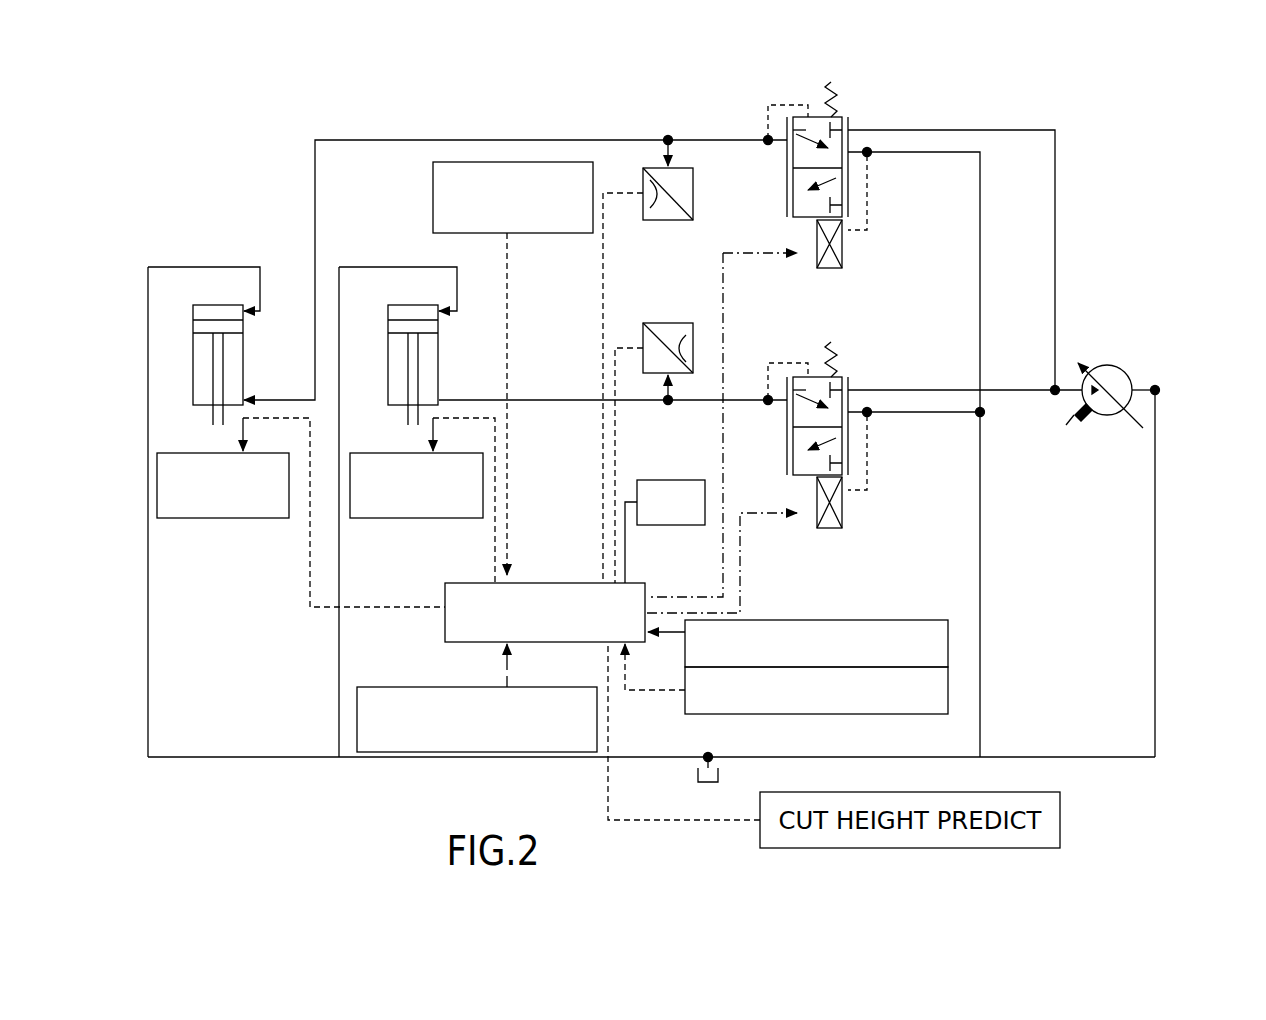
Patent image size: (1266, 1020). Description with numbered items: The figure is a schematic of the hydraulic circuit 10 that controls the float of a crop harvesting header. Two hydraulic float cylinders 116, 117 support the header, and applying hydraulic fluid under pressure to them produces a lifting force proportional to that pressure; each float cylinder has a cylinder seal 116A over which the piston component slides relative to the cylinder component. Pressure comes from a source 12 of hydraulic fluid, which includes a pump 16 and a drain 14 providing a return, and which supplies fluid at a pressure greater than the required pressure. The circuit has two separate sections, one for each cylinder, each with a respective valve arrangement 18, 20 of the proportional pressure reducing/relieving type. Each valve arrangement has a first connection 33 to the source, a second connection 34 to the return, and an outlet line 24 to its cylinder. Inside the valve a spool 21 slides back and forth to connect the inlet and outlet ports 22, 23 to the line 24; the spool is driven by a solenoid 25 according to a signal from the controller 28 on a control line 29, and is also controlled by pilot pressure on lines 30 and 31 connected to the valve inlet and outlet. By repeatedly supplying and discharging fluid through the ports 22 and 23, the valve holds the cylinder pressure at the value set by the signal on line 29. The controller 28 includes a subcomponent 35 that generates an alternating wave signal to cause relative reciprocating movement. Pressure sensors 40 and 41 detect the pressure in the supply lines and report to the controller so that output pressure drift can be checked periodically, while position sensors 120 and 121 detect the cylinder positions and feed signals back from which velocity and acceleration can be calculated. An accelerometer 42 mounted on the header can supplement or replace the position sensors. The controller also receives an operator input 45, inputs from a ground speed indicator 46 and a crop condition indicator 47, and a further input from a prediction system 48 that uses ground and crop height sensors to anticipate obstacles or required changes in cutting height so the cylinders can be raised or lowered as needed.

The circuit 10 is at (1125, 221).
The source 12 is at (1053, 400).
The drain 14 is at (1157, 392).
The pump 16 is at (1103, 415).
The valve arrangement 18 is at (822, 323).
The valve arrangement 20 is at (882, 462).
The spool 21 is at (790, 133).
The inlet port 22 is at (800, 196).
The outlet port 23 is at (793, 155).
The line 24 is at (355, 138).
The solenoid 25 is at (833, 260).
The controller 28 is at (575, 583).
The control line 29 is at (720, 418).
The pilot pressure line 30 is at (780, 105).
The pilot pressure line 31 is at (868, 196).
The first connection 33 is at (887, 130).
The second connection 34 is at (935, 152).
The subcomponent 35 is at (648, 480).
The pressure sensor 40 is at (675, 222).
The pressure sensor 41 is at (660, 323).
The accelerometer 42 is at (357, 703).
The operator input 45 is at (470, 168).
The ground speed indicator 46 is at (937, 630).
The crop condition indicator 47 is at (950, 675).
The prediction system 48 is at (1095, 757).
The hydraulic float cylinder 116 is at (192, 347).
The cylinder seal 116A is at (196, 327).
The hydraulic float cylinder 117 is at (438, 362).
The position sensor 120 is at (210, 520).
The position sensor 121 is at (377, 520).